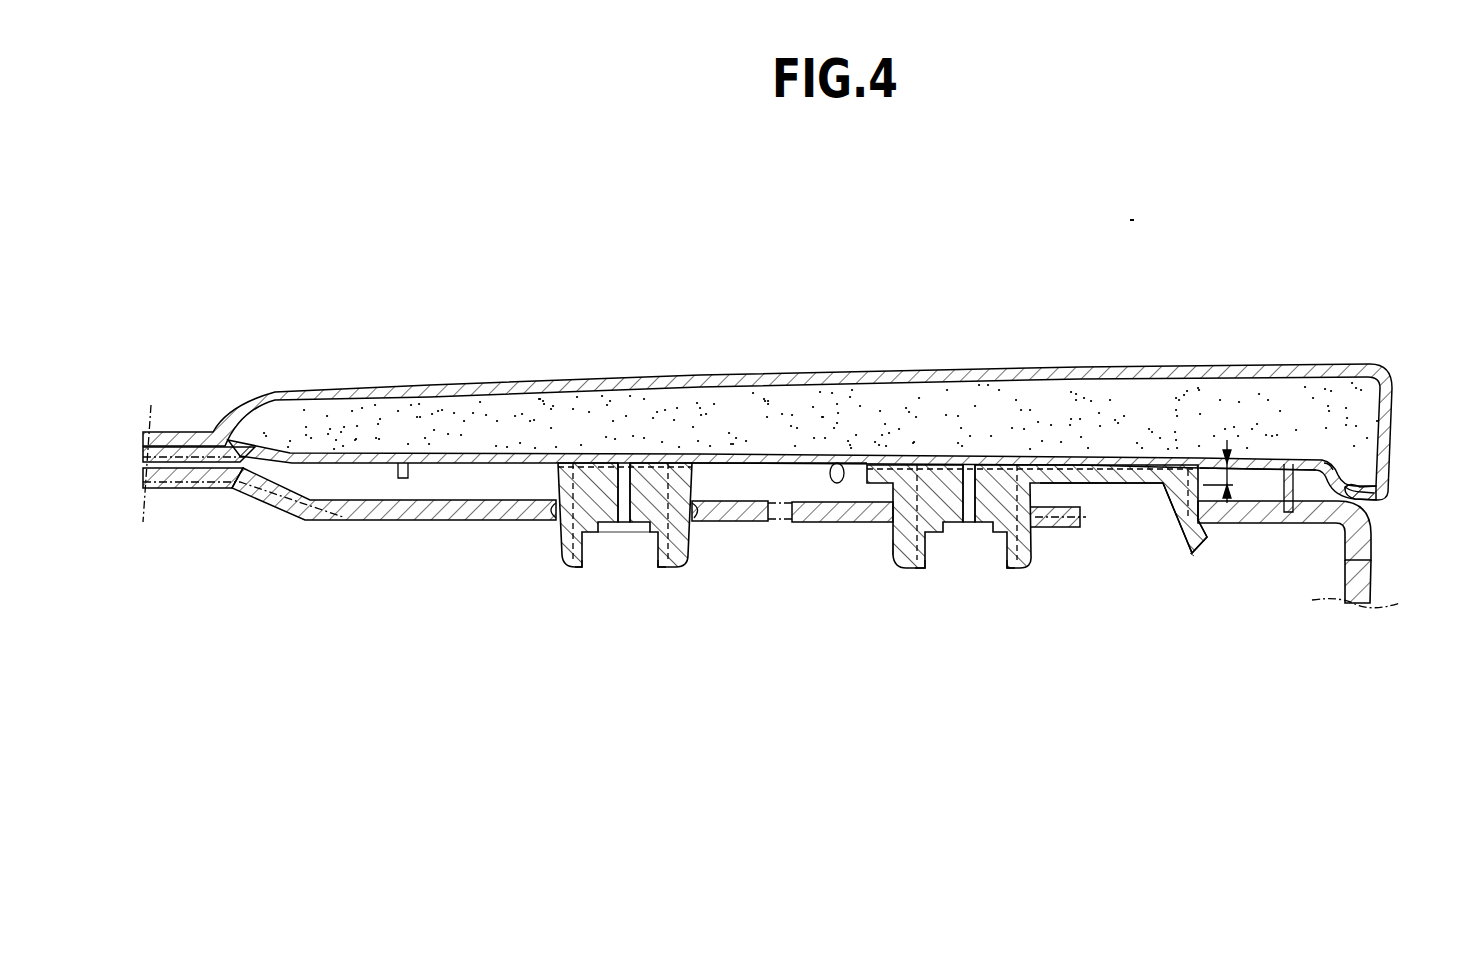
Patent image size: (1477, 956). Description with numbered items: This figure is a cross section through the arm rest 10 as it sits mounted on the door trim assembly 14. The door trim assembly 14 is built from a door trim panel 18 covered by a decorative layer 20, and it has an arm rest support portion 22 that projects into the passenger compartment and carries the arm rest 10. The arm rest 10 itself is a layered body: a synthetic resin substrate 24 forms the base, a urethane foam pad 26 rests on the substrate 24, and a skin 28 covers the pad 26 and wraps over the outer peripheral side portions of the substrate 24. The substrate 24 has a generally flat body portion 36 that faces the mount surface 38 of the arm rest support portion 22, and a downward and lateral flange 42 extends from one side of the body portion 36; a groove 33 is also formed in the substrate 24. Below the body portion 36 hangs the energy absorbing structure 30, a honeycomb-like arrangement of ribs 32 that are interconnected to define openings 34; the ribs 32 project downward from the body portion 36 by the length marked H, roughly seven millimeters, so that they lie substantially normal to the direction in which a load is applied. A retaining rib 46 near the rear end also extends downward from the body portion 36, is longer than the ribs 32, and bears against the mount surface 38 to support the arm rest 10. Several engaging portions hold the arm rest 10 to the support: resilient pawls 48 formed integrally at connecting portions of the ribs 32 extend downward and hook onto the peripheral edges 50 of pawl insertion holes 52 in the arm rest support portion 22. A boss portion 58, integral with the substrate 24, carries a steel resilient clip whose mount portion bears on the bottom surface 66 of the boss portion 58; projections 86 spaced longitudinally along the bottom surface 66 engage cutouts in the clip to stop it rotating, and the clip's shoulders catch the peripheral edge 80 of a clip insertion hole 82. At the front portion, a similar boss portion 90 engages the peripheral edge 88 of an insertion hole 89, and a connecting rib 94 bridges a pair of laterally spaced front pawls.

The arm rest 10 is at (686, 298).
The door trim assembly 14 is at (191, 417).
The door trim panel 18 is at (184, 492).
The decorative layer 20 is at (1368, 590).
The arm rest support portion 22 is at (1378, 535).
The substrate 24 is at (507, 452).
The pad 26 is at (1018, 396).
The skin 28 is at (1117, 367).
The energy absorbing structure 30 is at (1096, 494).
The ribs 32 is at (1137, 486).
The groove 33 is at (837, 455).
The openings 34 is at (1273, 467).
The body portion 36 is at (746, 453).
The mount surface 38 is at (452, 488).
The downward and lateral flange 42 is at (1380, 456).
The retaining rib 46 is at (1295, 474).
The resilient pawls 48 is at (1203, 540).
The peripheral edges 50 is at (1186, 520).
The pawl insertion holes 52 is at (1172, 512).
The boss portion 58 is at (959, 548).
The bottom surface 66 is at (633, 548).
The peripheral edge 80 is at (900, 556).
The clip insertion hole 82 is at (872, 545).
The projections 86 is at (590, 558).
The peripheral edge 88 is at (552, 556).
The insertion hole 89 is at (546, 536).
The boss portion 90 is at (609, 546).
The connecting rib 94 is at (394, 468).